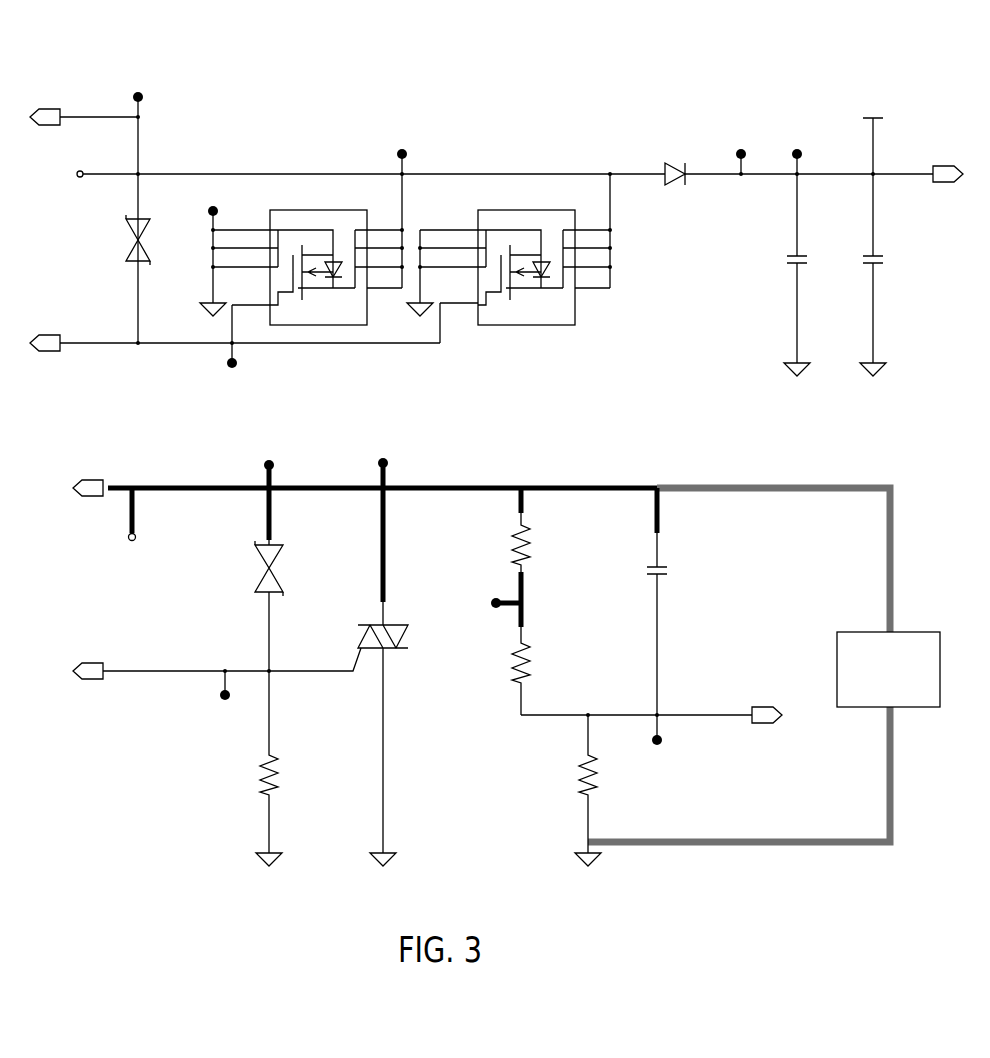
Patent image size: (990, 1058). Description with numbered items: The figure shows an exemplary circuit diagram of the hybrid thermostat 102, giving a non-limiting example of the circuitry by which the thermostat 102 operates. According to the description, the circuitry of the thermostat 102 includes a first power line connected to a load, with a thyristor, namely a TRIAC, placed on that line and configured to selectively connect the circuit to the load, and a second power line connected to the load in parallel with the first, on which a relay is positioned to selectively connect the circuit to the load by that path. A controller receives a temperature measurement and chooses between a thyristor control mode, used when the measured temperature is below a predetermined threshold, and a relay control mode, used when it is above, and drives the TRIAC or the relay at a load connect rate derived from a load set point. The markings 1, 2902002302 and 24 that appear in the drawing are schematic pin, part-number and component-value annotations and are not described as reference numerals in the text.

The hybrid thermostat 102 is at (496, 453).
The pin 1 of connector E1 1 is at (107, 174).
The connector E2 part number 2902002302 is at (173, 530).
The resistor R52 value 24 is at (567, 790).